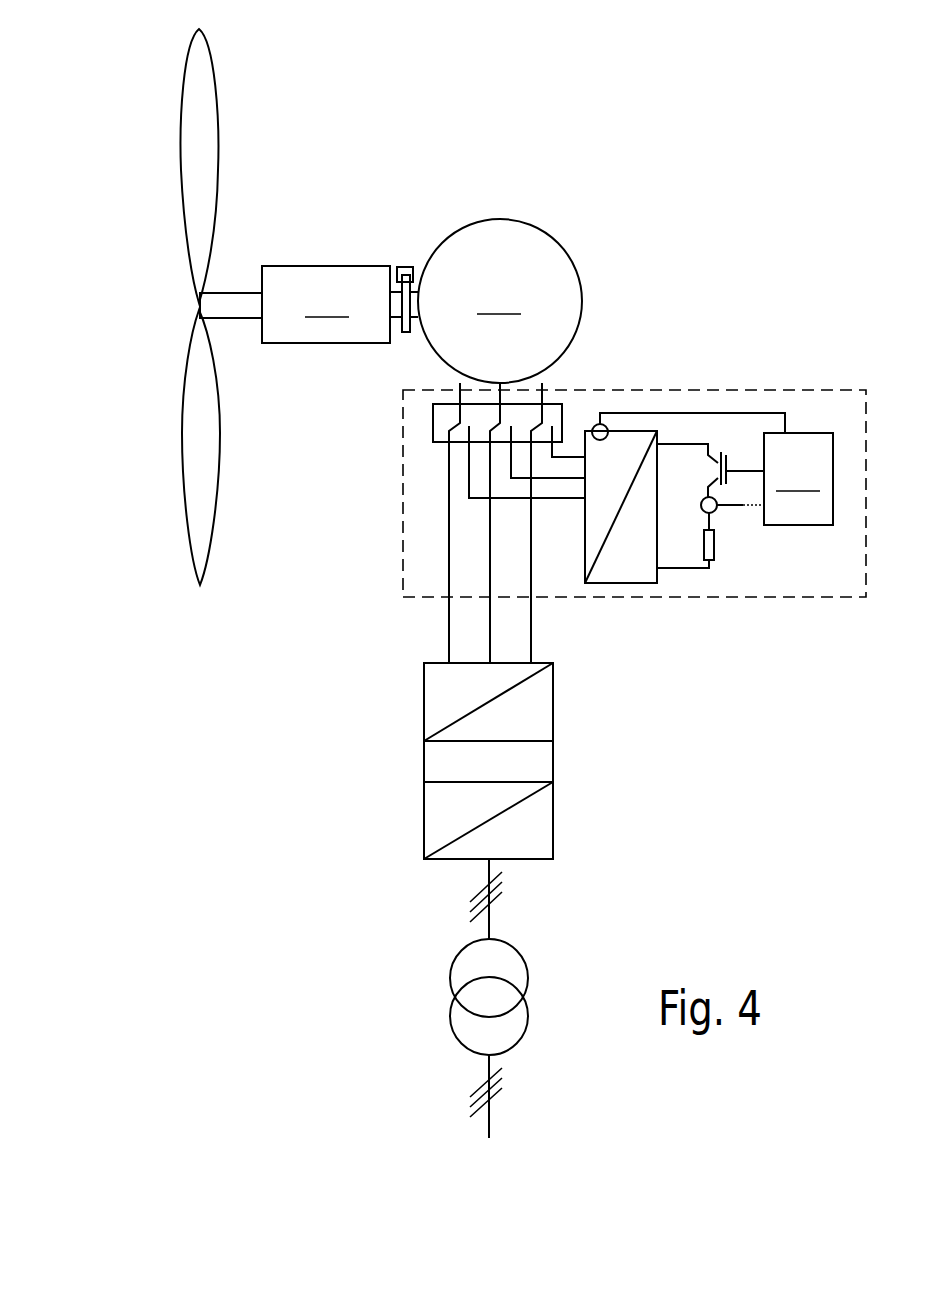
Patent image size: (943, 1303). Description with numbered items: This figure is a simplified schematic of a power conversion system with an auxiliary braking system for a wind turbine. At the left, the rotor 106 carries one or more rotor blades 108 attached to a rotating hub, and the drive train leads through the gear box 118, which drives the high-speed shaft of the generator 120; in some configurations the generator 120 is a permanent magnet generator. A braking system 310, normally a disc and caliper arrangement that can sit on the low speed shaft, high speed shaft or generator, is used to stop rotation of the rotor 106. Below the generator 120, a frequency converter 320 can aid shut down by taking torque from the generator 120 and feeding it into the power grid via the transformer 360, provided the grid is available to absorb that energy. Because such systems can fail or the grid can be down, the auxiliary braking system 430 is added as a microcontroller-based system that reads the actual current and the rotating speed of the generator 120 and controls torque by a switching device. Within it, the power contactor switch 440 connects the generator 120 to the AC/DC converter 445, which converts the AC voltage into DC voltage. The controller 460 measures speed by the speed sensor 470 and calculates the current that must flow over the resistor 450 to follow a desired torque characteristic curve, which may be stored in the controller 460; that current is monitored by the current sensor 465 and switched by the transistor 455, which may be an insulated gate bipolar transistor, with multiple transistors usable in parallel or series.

The rotor 106 is at (128, 262).
The rotor blades 108 is at (217, 96).
The gear box 118 is at (326, 304).
The generator 120 is at (500, 301).
The braking system 310 is at (410, 265).
The frequency converter 320 is at (424, 752).
The transformer 360 is at (450, 985).
The auxiliary braking system 430 is at (400, 555).
The power contactor switch 440 is at (433, 413).
The AC/DC converter 445 is at (620, 584).
The resistor or shunt 450 is at (715, 548).
The transistor 455 is at (728, 458).
The controller 460 is at (798, 479).
The current sensor 465 is at (718, 510).
The speed sensor 470 is at (600, 423).